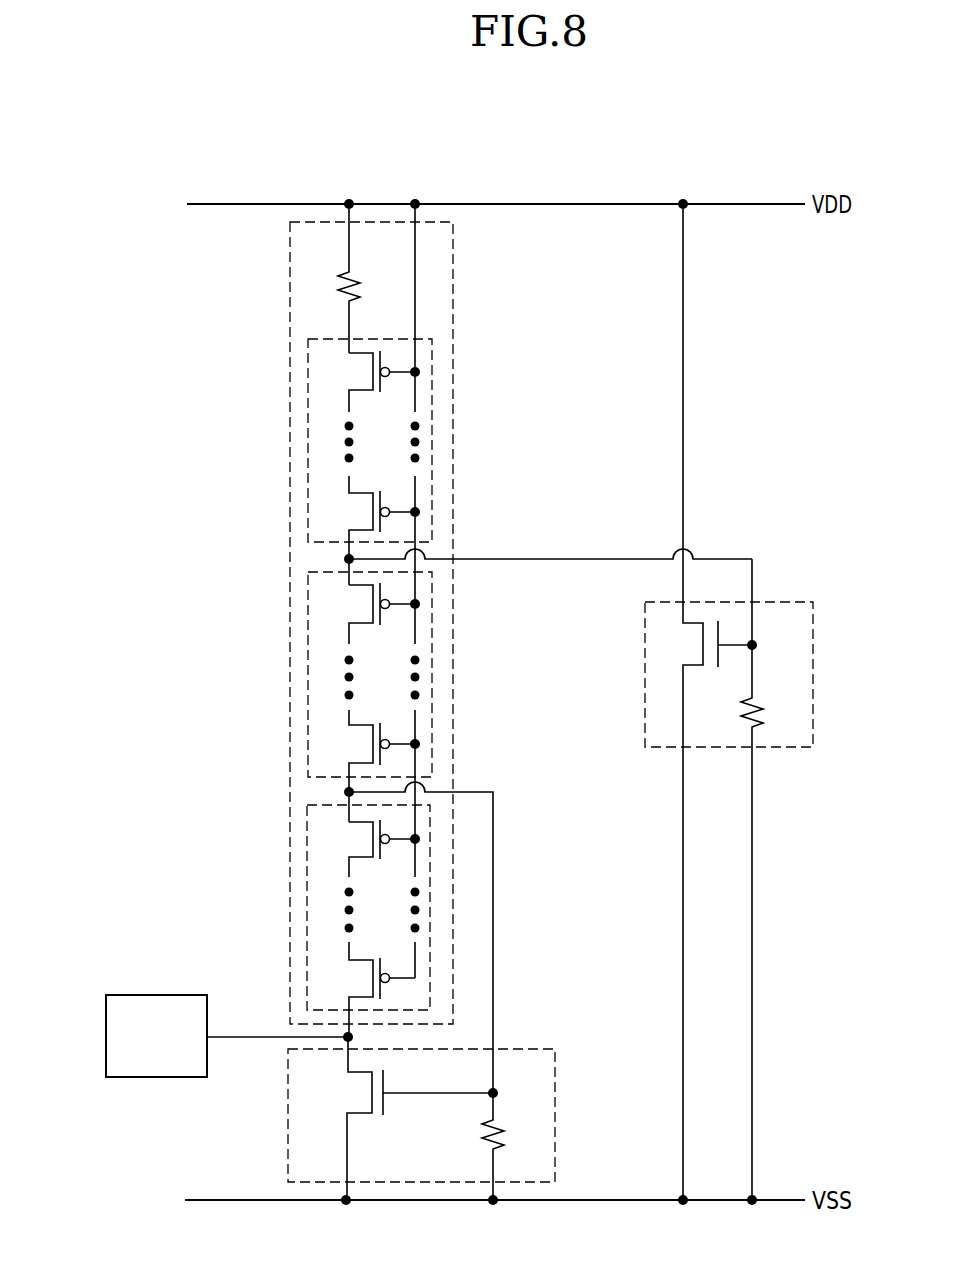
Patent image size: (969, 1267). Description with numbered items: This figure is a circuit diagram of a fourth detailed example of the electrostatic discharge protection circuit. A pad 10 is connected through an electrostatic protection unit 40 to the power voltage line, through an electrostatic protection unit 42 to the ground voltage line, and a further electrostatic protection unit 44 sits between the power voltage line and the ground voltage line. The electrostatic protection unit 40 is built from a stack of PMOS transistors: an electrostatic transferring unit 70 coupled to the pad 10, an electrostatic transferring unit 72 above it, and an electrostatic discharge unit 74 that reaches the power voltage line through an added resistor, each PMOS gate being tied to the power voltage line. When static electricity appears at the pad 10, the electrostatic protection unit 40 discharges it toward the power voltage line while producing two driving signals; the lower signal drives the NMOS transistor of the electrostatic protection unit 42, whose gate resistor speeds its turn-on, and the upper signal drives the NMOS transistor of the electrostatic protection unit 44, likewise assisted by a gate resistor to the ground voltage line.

The pad 10 is at (106, 1036).
The electrostatic protection unit 40 is at (484, 648).
The electrostatic protection unit 42 is at (288, 1131).
The electrostatic protection unit 44 is at (813, 662).
The electrostatic transferring unit 70 is at (307, 909).
The electrostatic transferring unit 72 is at (308, 675).
The electrostatic discharge unit 74 is at (308, 441).